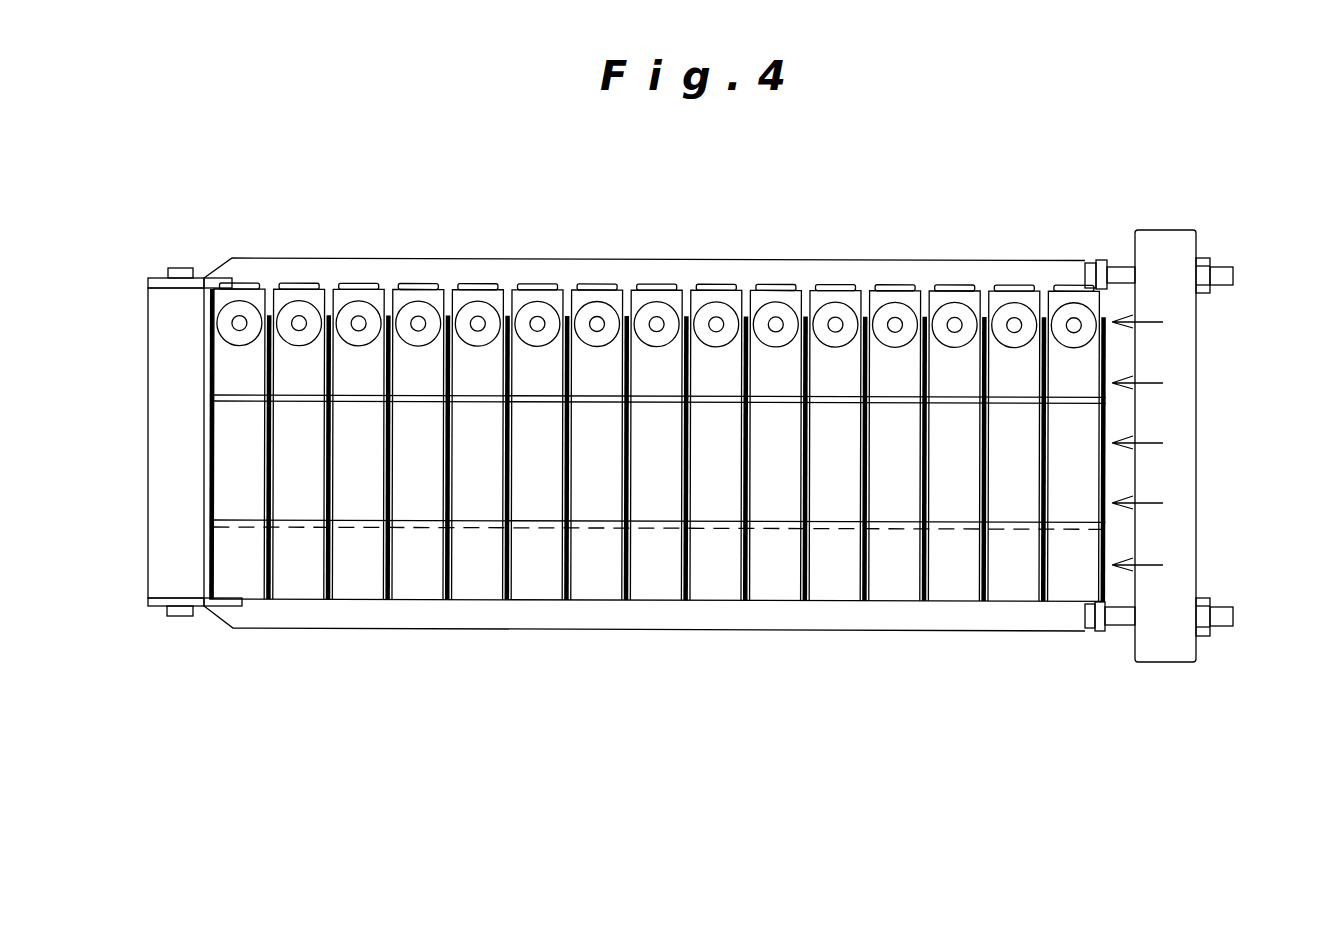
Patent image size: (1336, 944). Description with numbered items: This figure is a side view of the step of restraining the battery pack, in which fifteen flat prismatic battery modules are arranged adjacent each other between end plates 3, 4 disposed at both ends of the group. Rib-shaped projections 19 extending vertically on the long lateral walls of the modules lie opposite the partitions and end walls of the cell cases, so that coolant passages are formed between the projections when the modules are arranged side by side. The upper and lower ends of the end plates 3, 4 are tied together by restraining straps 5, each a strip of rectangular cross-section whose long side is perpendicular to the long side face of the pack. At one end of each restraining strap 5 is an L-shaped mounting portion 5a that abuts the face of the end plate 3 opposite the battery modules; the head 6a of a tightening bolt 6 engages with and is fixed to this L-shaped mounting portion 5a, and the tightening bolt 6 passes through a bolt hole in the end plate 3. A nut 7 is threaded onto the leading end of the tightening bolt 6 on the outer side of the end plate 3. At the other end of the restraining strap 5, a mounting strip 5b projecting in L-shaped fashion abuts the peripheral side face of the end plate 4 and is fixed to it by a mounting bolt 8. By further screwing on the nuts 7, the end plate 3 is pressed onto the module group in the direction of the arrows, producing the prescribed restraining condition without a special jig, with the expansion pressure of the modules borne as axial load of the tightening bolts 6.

The end plate 3 is at (1165, 270).
The end plate 4 is at (175, 318).
The restraining strap 5 is at (772, 258).
The L-shaped mounting portion 5a is at (1107, 262).
The mounting strip 5b is at (158, 280).
The tightening bolt 6 is at (1223, 273).
The head of tightening bolt 6a is at (1090, 268).
The nut 7 is at (1210, 293).
The mounting bolt 8 is at (177, 268).
The rib-shaped projection 19 is at (933, 567).